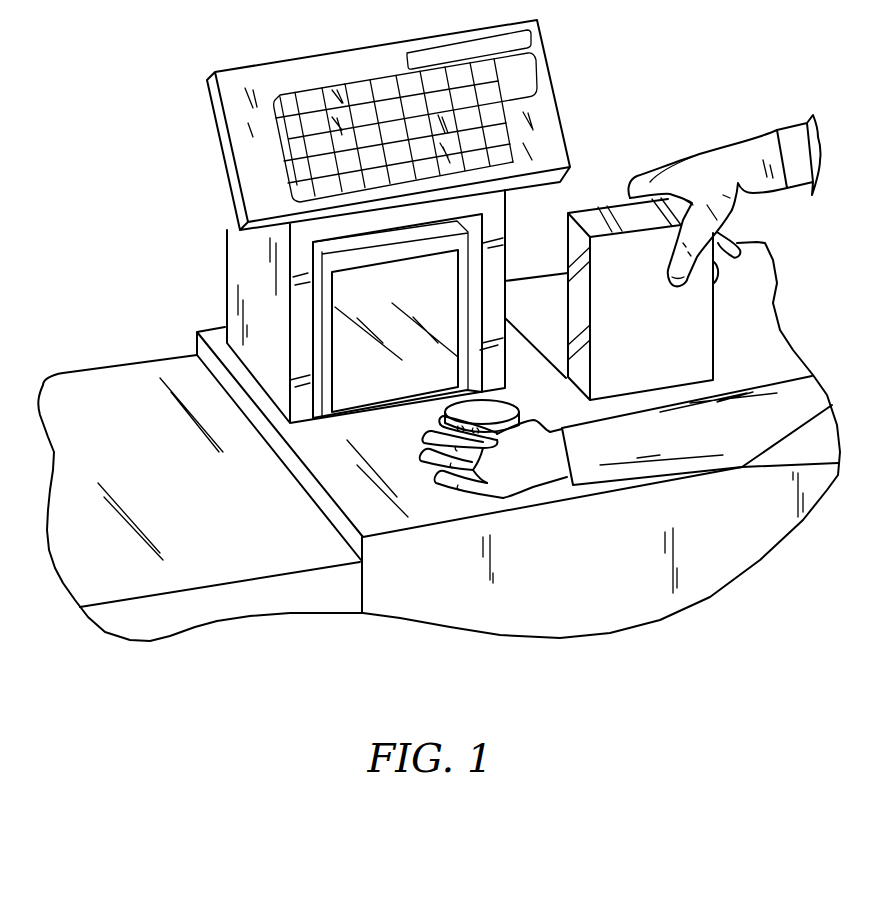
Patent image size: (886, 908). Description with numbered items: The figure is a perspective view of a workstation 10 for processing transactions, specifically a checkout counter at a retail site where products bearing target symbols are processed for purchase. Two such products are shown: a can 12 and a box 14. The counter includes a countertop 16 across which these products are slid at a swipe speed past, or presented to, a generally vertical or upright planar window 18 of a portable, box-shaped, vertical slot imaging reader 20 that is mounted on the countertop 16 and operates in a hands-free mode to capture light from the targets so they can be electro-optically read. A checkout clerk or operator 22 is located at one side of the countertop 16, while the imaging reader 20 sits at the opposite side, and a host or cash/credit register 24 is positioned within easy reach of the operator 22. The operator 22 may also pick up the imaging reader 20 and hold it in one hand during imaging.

The workstation 10 is at (517, 315).
The can 12 is at (473, 497).
The box 14 is at (607, 303).
The countertop 16 is at (342, 490).
The window 18 is at (367, 398).
The imaging reader 20 is at (367, 258).
The operator 22 is at (799, 372).
The cash/credit register 24 is at (334, 63).